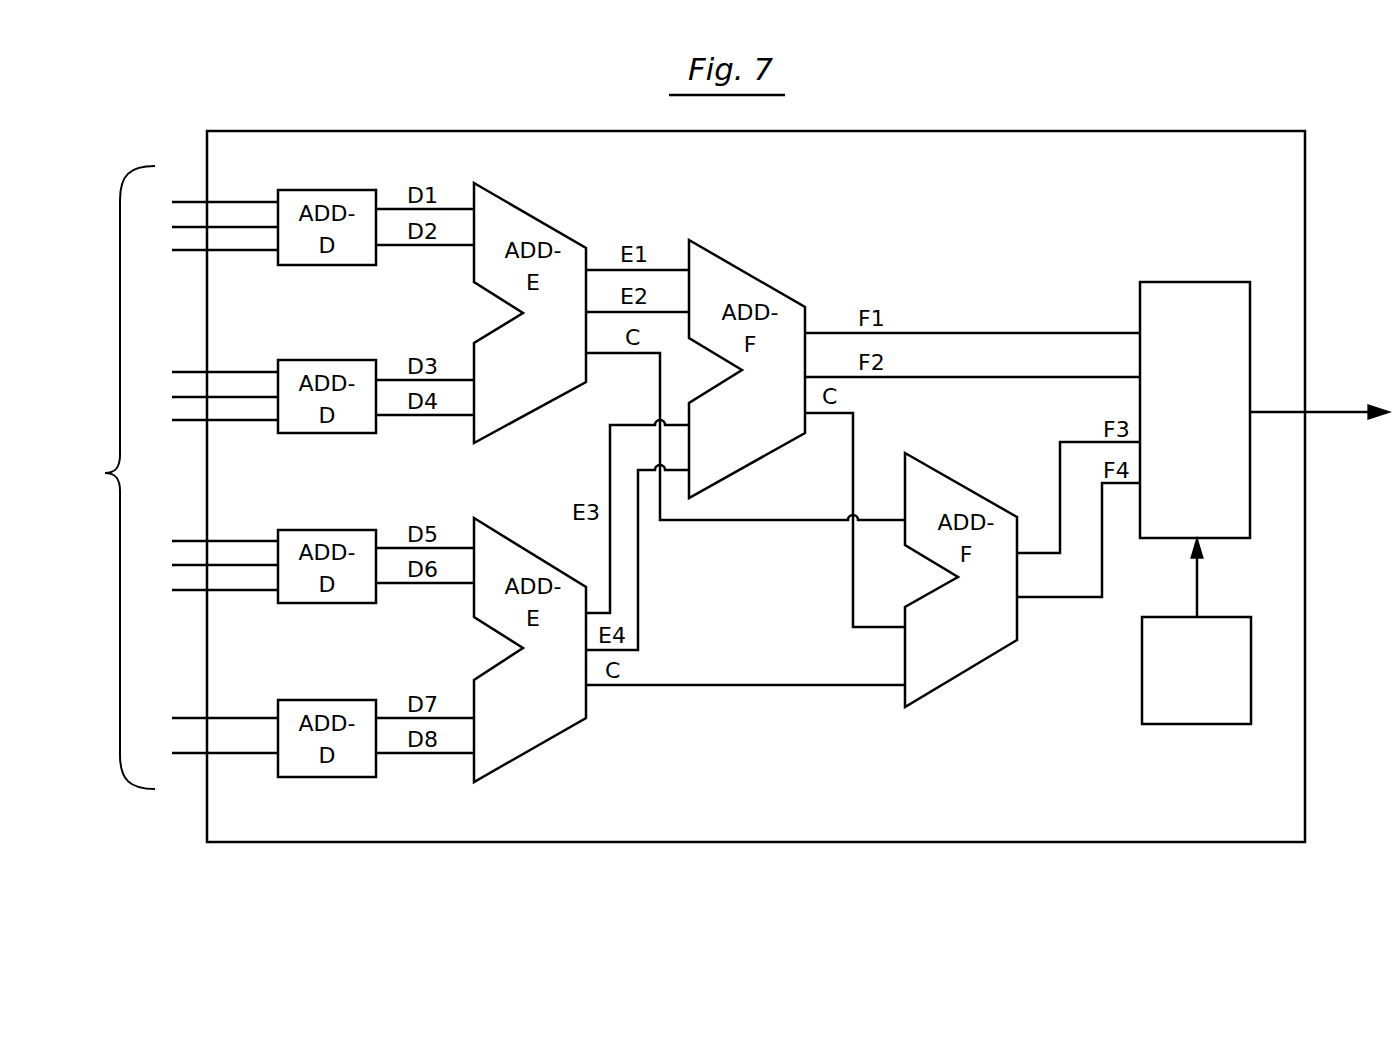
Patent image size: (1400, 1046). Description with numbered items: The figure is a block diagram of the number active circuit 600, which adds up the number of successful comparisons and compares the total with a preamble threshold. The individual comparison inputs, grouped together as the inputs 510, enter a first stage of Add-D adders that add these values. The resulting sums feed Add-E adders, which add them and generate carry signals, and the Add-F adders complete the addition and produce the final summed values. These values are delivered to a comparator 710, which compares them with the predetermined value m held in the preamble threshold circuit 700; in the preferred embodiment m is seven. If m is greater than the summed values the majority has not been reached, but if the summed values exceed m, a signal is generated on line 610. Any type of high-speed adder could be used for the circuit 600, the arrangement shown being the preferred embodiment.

The successful comparison inputs C1 through CB 510 is at (160, 477).
The number active circuit 600 is at (668, 843).
The output line 610 is at (1328, 410).
The preamble threshold circuit 700 is at (1188, 724).
The comparator 710 is at (1182, 282).